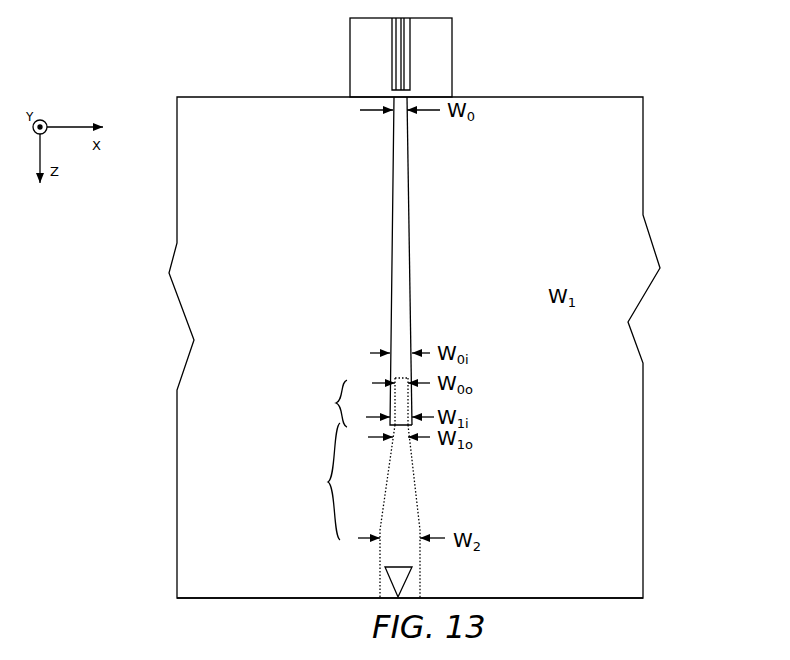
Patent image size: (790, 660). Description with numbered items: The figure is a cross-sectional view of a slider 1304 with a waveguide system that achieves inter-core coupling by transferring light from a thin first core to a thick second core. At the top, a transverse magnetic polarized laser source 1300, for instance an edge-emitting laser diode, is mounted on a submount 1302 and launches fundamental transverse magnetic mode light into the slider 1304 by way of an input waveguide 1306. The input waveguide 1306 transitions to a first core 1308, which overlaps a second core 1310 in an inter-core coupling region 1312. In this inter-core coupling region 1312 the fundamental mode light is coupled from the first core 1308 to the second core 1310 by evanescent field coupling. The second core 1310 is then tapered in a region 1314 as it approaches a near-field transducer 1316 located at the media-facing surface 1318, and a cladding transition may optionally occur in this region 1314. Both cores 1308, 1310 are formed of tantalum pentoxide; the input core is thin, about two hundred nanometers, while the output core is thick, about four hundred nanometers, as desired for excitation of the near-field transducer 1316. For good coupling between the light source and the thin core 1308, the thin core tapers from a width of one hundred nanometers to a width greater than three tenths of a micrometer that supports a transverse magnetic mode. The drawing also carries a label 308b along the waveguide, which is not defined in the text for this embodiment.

The transverse magnetic polarized laser source 1300 is at (392, 42).
The submount 1302 is at (450, 38).
The slider 1304 is at (185, 76).
The input waveguide 1306 is at (394, 122).
The channel sidewall 308b is at (428, 338).
The first core 1308 is at (388, 380).
The second core 1310 is at (407, 450).
The inter-core coupling region 1312 is at (315, 403).
The tapered region 1314 is at (310, 481).
The near-field transducer 1316 is at (386, 590).
The media-facing surface 1318 is at (243, 600).